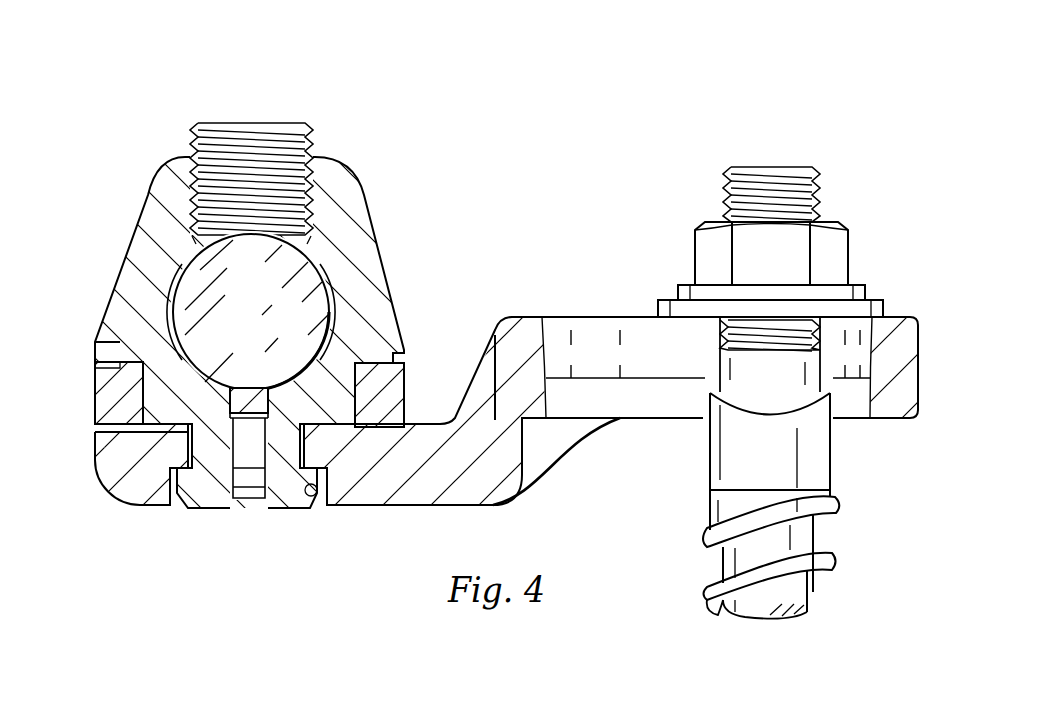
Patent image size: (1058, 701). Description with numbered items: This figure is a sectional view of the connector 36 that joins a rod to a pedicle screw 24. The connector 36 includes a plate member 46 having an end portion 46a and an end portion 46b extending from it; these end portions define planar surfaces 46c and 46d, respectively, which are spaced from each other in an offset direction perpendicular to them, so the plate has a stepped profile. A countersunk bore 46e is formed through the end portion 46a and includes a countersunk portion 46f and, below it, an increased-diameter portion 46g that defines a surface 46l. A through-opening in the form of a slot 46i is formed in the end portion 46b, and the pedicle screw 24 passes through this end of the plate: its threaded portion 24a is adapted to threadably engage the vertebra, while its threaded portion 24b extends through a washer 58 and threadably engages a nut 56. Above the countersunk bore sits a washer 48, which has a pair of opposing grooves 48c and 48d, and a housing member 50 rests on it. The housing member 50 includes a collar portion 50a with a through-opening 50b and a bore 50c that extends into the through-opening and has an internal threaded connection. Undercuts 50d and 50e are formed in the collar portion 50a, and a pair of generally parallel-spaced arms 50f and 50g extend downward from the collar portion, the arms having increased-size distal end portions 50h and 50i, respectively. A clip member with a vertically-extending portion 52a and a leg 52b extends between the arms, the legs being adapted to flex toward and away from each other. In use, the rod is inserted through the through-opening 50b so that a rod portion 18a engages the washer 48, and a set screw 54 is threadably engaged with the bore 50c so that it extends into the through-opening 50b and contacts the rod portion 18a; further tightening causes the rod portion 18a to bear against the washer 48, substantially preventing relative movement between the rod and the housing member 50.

The connector 36 is at (621, 138).
The rod portion 18a is at (269, 292).
The pedicle screw 24 is at (702, 505).
The threaded portion 24a is at (833, 558).
The threaded portion 24b is at (824, 186).
The plate member 46 is at (521, 313).
The end portion 46a is at (122, 503).
The end portion 46b is at (921, 401).
The planar surface 46c is at (455, 507).
The planar surface 46d is at (877, 424).
The countersunk bore 46e is at (208, 452).
The countersunk portion 46f is at (178, 425).
The increased-diameter portion 46g is at (307, 500).
The slot 46i is at (565, 430).
The surface 46l is at (330, 475).
The washer 48 is at (93, 426).
The groove 48c is at (116, 343).
The groove 48d is at (397, 357).
The housing member 50 is at (365, 189).
The collar portion 50a is at (373, 228).
The through-opening 50b is at (170, 263).
The bore 50c is at (193, 177).
The undercut 50d is at (97, 380).
The undercut 50e is at (405, 381).
The arm 50f is at (213, 500).
The arm 50g is at (277, 500).
The distal end portion 50h is at (167, 481).
The distal end portion 50i is at (318, 499).
The vertically-extending portion 52a is at (247, 387).
The leg 52b is at (248, 502).
The set screw 54 is at (262, 124).
The nut 56 is at (850, 263).
The washer 58 is at (889, 310).